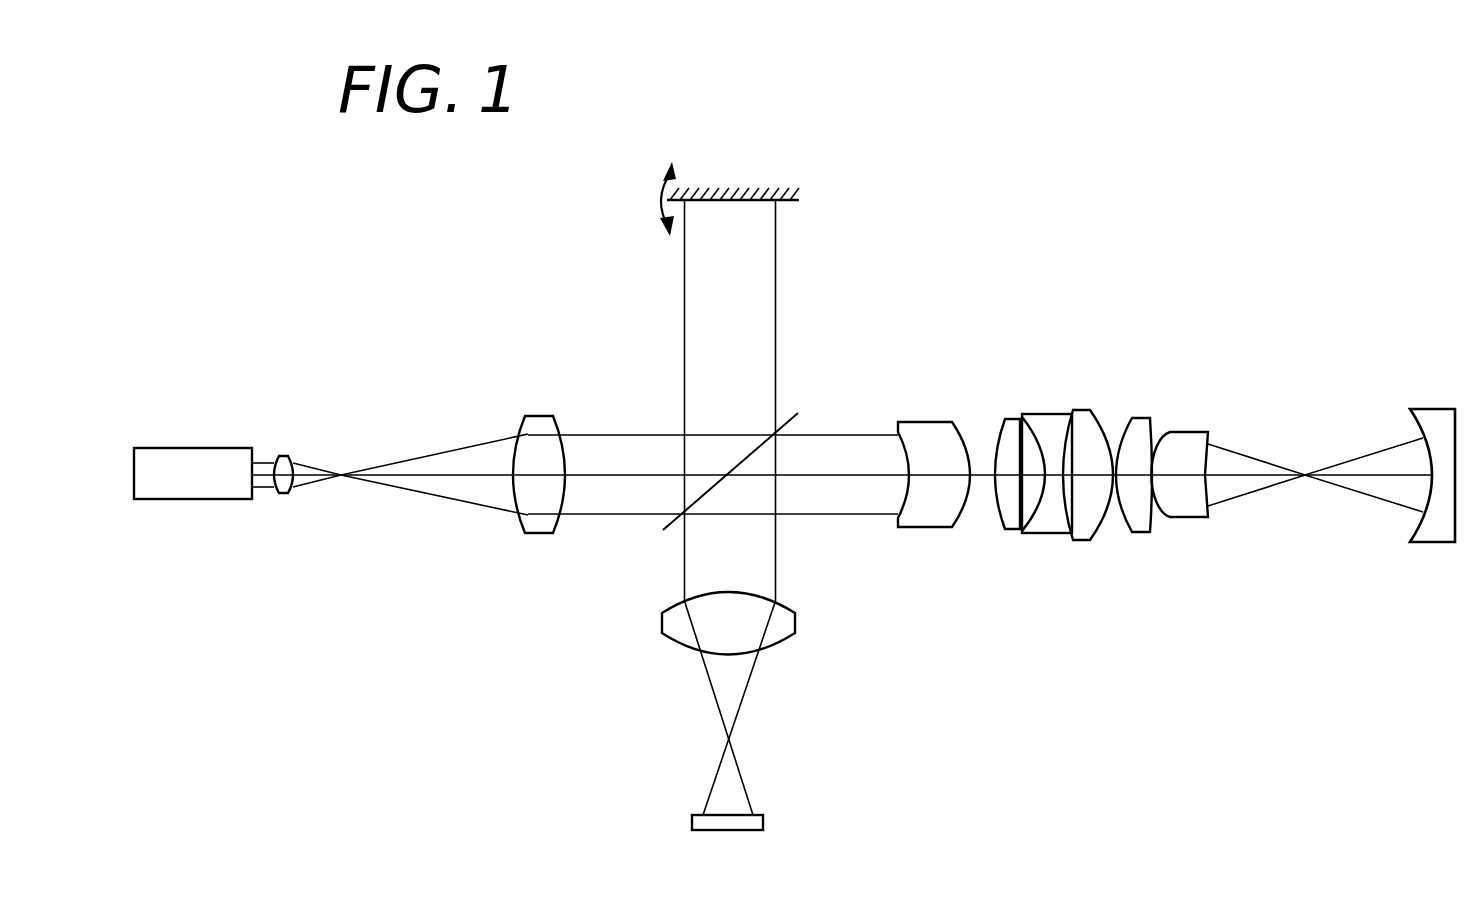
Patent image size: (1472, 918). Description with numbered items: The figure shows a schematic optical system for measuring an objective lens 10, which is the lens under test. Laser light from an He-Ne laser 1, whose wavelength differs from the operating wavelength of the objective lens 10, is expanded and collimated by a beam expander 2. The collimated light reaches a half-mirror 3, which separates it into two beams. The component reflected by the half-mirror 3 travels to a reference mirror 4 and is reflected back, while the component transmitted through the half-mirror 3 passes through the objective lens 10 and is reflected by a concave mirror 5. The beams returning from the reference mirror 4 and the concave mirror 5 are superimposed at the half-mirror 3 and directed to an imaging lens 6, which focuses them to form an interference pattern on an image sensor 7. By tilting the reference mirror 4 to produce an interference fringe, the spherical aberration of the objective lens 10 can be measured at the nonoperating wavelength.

The He-Ne laser 1 is at (165, 492).
The beam expander 2 is at (571, 557).
The half-mirror 3 is at (663, 533).
The reference mirror 4 is at (782, 203).
The concave mirror 5 is at (1430, 530).
The imaging lens 6 is at (780, 628).
The image sensor 7 is at (760, 822).
The objective lens 10 is at (1227, 557).